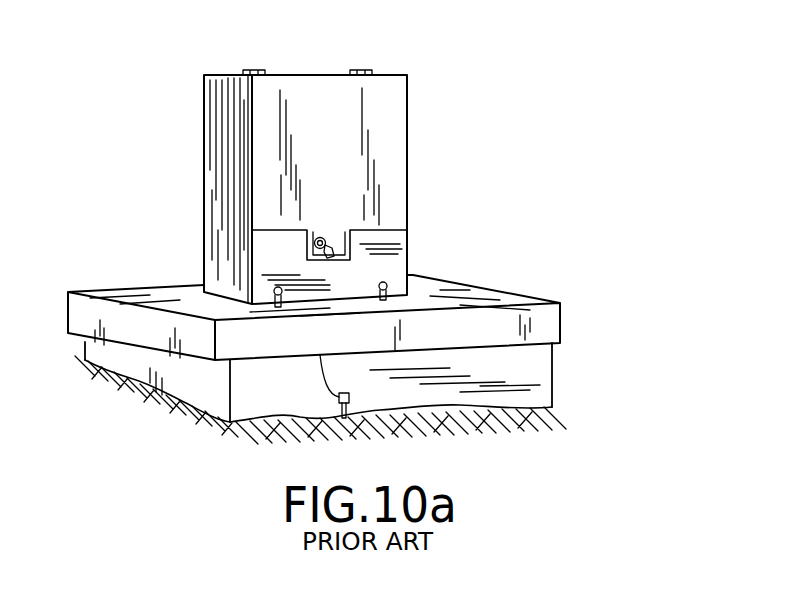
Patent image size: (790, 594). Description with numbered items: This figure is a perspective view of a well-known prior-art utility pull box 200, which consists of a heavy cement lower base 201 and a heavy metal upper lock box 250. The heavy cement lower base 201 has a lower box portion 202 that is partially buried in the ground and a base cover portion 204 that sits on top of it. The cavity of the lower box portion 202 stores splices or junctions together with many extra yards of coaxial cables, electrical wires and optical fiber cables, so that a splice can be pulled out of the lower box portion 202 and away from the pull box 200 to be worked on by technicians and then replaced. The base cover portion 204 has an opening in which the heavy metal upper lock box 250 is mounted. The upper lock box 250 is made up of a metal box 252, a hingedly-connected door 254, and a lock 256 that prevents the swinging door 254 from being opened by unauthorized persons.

The utility pull box 200 is at (126, 240).
The heavy cement lower base 201 is at (565, 364).
The lower box portion 202 is at (556, 395).
The base cover portion 204 is at (556, 320).
The heavy metal upper lock box 250 is at (428, 157).
The metal box 252 is at (395, 92).
The hingedly-connected door 254 is at (398, 240).
The lock 256 is at (326, 240).